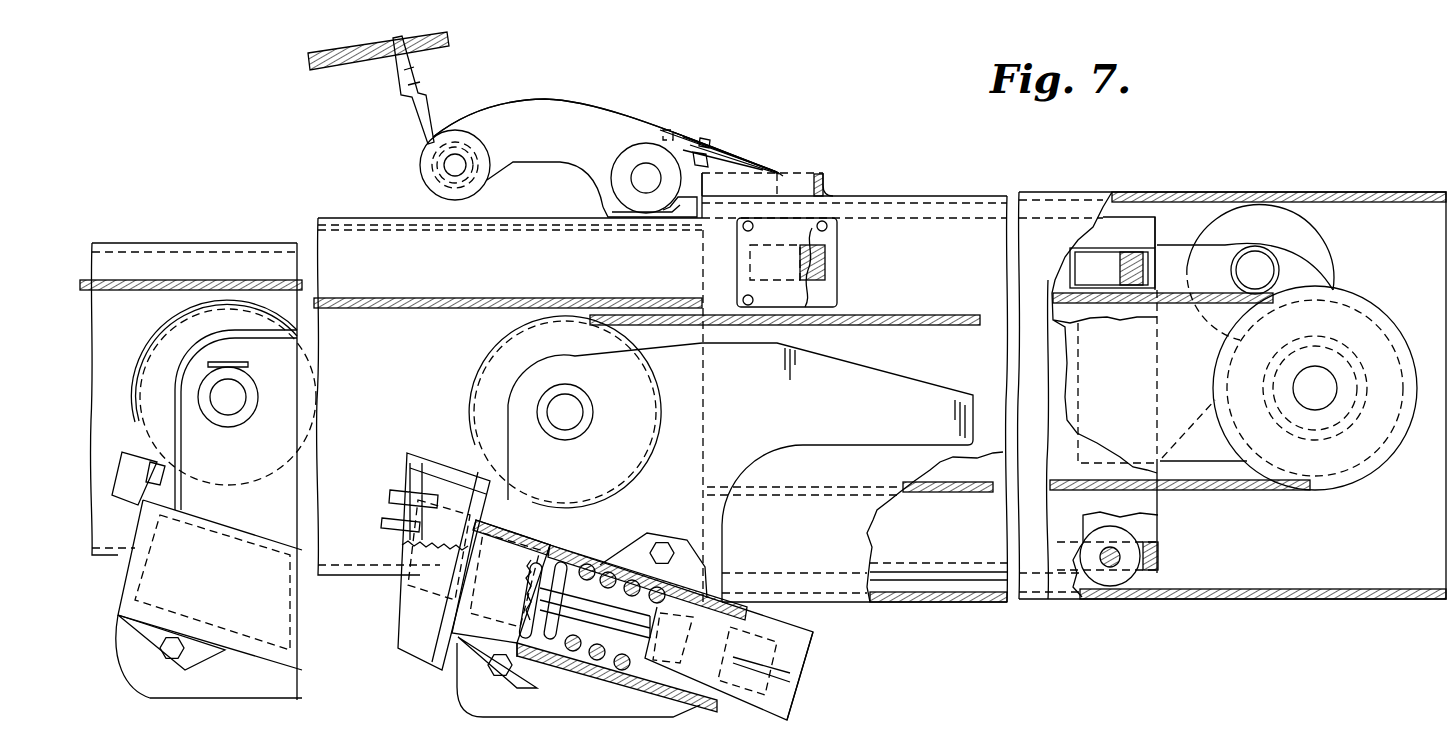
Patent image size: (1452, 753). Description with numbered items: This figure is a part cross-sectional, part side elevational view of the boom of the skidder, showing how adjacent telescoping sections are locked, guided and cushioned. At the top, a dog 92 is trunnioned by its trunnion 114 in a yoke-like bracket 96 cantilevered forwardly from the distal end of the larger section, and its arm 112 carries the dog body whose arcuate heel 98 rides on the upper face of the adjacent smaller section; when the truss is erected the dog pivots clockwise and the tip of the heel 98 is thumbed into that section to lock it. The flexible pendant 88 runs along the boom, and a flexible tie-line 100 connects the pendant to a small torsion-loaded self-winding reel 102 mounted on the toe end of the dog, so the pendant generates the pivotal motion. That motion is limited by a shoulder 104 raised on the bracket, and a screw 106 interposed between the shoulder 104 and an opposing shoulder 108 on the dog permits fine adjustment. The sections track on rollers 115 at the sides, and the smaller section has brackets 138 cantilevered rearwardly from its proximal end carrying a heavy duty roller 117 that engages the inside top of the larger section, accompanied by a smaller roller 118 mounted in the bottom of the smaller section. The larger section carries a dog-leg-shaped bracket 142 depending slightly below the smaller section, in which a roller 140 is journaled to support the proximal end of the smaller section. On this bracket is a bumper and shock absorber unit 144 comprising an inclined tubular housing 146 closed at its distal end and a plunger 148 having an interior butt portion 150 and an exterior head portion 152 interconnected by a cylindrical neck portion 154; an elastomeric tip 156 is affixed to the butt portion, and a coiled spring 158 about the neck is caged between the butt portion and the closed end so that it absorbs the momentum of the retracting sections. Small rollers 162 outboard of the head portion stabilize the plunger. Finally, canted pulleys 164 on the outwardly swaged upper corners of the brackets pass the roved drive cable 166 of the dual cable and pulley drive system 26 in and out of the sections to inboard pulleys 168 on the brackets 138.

The dual cable and pulley drive system 26 is at (418, 290).
The flexible pendant 88 is at (333, 70).
The dog 92 is at (548, 95).
The yoke-like bracket 96 is at (750, 168).
The heel 98 is at (612, 232).
The flexible tie-line 100 is at (410, 112).
The torsion-loaded self-winding reel 102 is at (418, 163).
The shoulder 104 is at (715, 147).
The screw 106 is at (697, 145).
The opposing shoulder 108 is at (710, 143).
The arm 112 is at (512, 112).
The trunnion 114 is at (630, 179).
The roller 115 is at (815, 262).
The heavy duty roller 117 is at (1303, 213).
The smaller roller 118 is at (1140, 582).
The bracket 138 is at (1172, 253).
The roller 140 is at (540, 668).
The dog-leg-shaped bracket 142 is at (838, 440).
The bumper and shock absorber unit 144 is at (281, 674).
The tubular housing 146 is at (636, 700).
The plunger 148 is at (406, 612).
The interior butt portion 150 is at (742, 695).
The exterior head portion 152 is at (422, 645).
The cylindrical neck portion 154 is at (598, 590).
The elastomeric tip 156 is at (808, 650).
The coiled spring 158 is at (587, 690).
The small roller 162 is at (393, 500).
The canted pulley 164 is at (168, 340).
The roved drive cable 166 is at (492, 298).
The inboard pulley 168 is at (1342, 465).